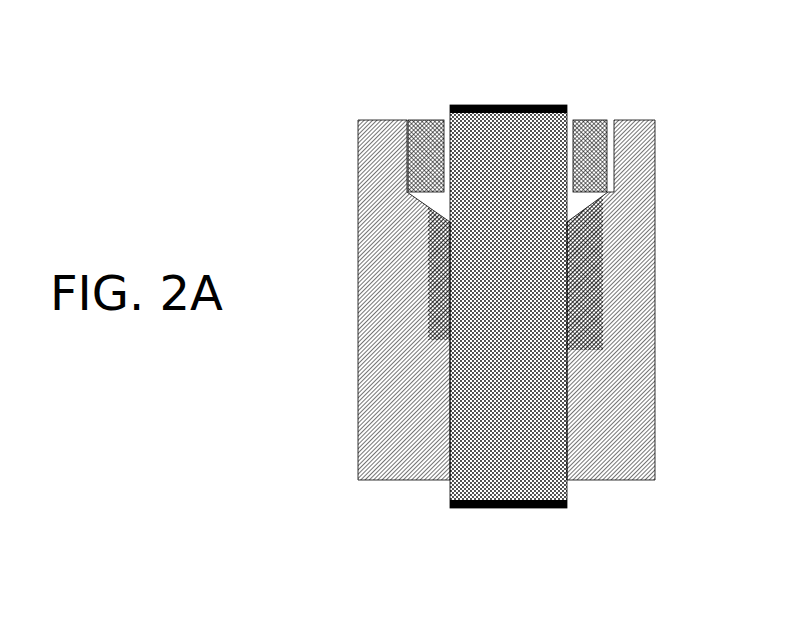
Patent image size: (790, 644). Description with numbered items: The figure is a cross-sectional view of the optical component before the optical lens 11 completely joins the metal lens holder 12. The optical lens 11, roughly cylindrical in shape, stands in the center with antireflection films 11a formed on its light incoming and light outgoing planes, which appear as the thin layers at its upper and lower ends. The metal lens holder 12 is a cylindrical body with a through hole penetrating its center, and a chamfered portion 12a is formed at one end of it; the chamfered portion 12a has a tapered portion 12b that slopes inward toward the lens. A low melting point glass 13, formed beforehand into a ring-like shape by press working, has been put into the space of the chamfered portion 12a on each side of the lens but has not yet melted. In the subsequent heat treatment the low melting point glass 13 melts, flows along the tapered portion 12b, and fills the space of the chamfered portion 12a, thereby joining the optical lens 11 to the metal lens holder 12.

The optical lens 11 is at (530, 113).
The antireflection film 11a is at (497, 508).
The metal lens holder 12 is at (642, 122).
The chamfered portion 12a is at (408, 127).
The tapered portion 12b is at (405, 200).
The low melting point glass 13 is at (593, 122).